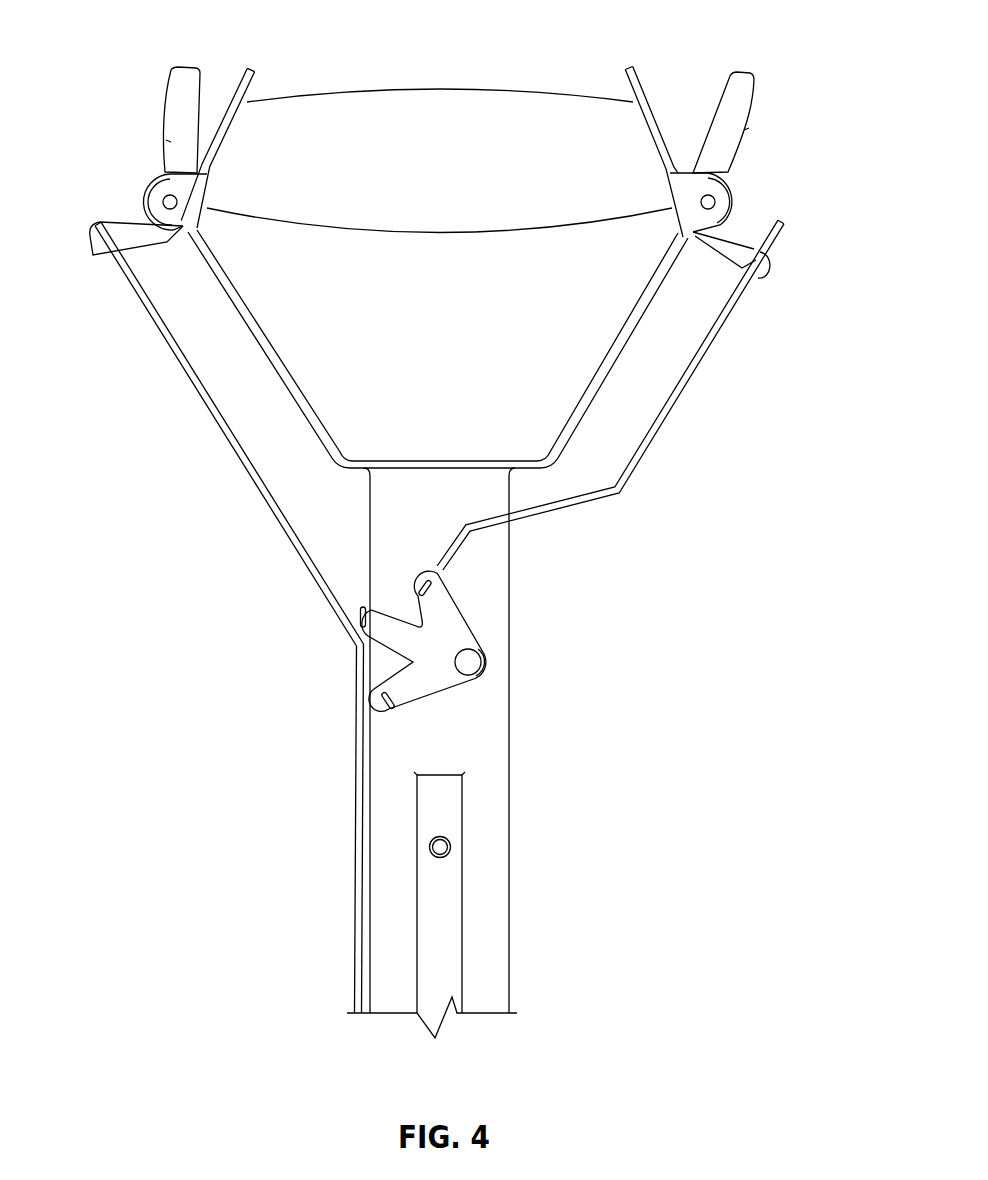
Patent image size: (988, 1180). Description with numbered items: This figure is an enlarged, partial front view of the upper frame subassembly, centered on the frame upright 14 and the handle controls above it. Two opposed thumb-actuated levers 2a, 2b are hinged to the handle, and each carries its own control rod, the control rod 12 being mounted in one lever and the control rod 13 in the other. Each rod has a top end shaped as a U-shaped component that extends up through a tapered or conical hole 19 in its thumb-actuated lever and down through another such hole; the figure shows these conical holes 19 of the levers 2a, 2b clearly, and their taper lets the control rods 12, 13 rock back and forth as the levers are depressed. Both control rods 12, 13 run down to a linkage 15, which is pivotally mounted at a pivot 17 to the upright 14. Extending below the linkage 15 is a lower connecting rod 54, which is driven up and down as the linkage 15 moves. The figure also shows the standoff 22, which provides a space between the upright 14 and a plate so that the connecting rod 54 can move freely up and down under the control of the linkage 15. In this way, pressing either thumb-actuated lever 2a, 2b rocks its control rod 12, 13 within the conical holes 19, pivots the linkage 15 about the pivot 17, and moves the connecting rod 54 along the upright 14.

The thumb-actuated lever 2a is at (753, 92).
The thumb-actuated lever 2b is at (170, 87).
The control rod 12 is at (667, 417).
The control rod 13 is at (237, 458).
The frame upright 14 is at (500, 753).
The linkage 15 is at (455, 620).
The pivot 17 is at (470, 660).
The conical hole 19 is at (773, 267).
The standoff 22 is at (447, 942).
The lower connecting rod 54 is at (355, 792).